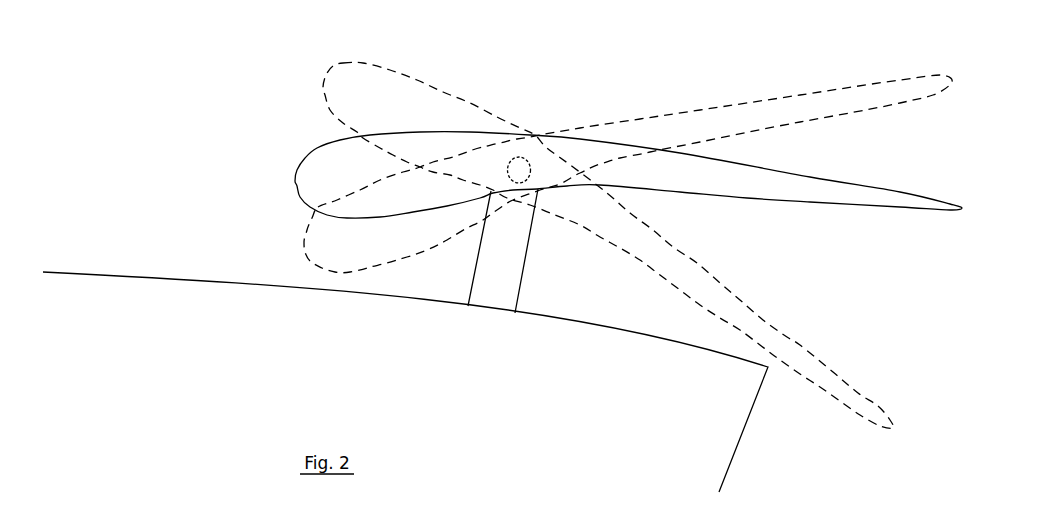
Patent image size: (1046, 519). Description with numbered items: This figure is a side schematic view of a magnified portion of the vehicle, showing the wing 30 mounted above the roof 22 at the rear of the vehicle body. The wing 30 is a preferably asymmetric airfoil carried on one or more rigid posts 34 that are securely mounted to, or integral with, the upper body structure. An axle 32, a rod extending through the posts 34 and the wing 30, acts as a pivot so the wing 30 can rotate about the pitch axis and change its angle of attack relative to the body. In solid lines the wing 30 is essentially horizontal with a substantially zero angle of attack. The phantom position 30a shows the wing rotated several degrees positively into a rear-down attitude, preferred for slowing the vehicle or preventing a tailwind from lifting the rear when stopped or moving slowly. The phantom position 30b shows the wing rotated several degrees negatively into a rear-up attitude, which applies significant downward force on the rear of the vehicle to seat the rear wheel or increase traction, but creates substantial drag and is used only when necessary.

The roof 22 is at (124, 273).
The wing 30 is at (297, 170).
The rear down position of the wing 30a is at (328, 78).
The rear up position of the wing 30b is at (307, 249).
The axle 32 is at (524, 157).
The rigid post 34 is at (482, 279).